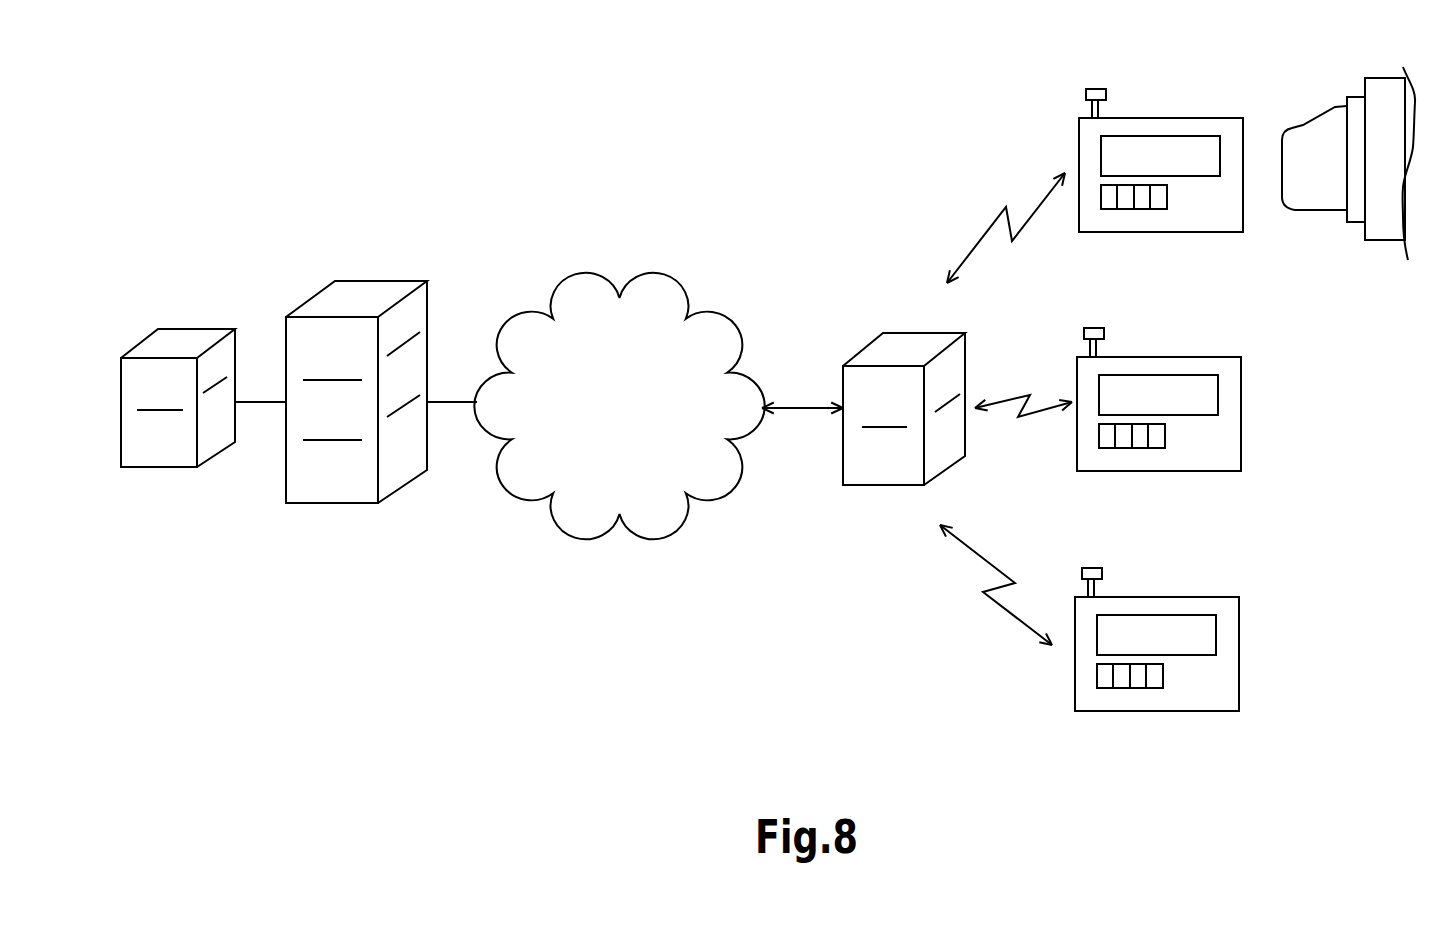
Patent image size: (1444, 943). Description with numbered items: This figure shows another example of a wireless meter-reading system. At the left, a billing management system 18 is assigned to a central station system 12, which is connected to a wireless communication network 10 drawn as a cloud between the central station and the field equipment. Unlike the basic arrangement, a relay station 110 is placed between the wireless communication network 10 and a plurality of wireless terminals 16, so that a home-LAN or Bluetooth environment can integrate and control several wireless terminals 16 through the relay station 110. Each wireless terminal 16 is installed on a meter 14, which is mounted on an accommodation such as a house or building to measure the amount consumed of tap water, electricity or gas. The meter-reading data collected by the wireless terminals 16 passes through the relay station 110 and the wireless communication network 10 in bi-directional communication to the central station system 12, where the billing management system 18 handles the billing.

The wireless communication network 10 is at (648, 413).
The central station system 12 is at (380, 281).
The meter 14 is at (1300, 125).
The wireless terminal 16 is at (1160, 118).
The billing management system 18 is at (197, 329).
The relay station 110 is at (895, 333).